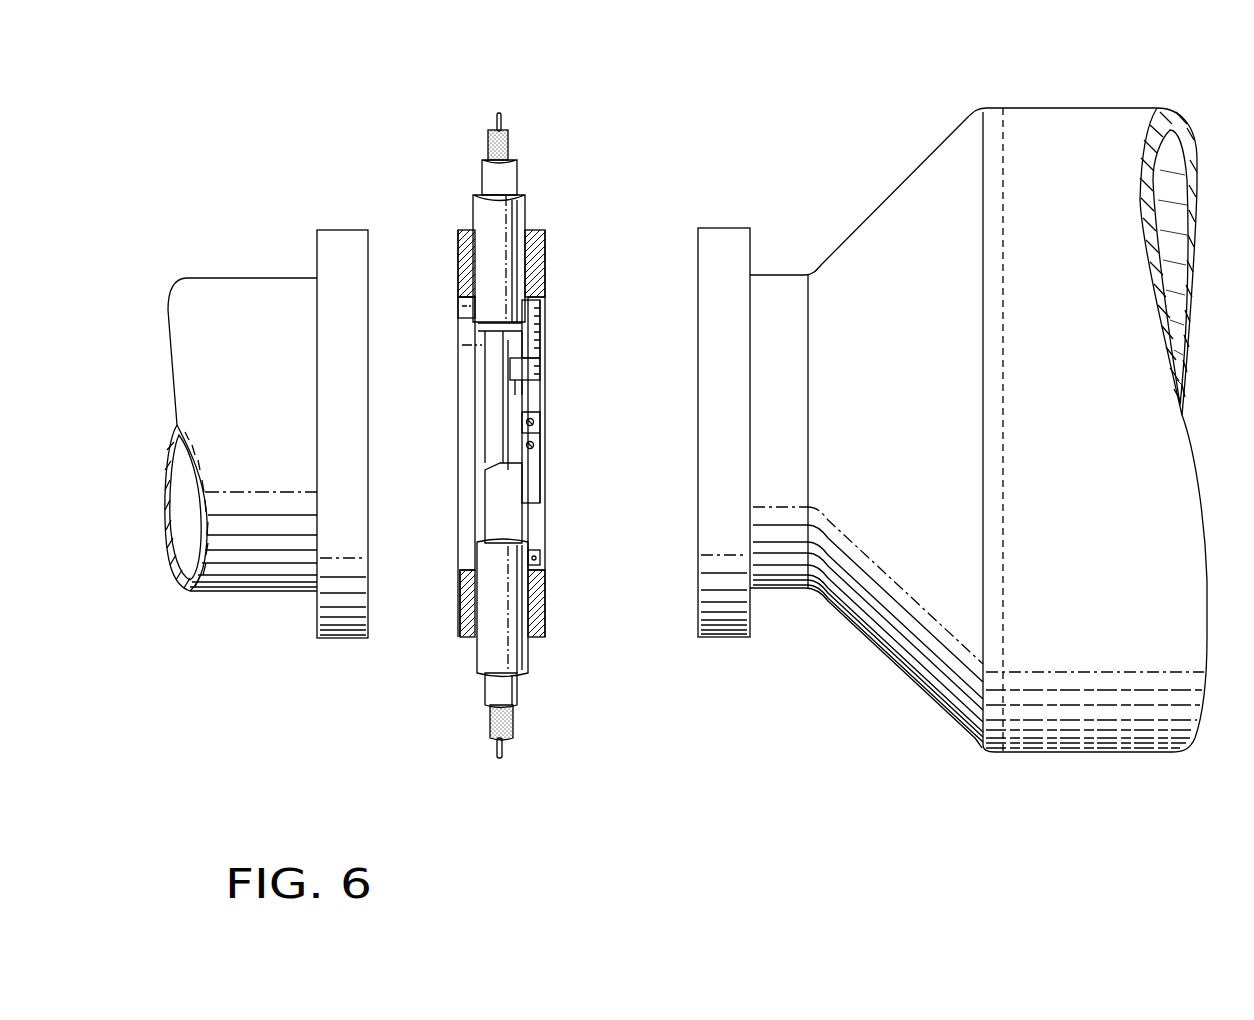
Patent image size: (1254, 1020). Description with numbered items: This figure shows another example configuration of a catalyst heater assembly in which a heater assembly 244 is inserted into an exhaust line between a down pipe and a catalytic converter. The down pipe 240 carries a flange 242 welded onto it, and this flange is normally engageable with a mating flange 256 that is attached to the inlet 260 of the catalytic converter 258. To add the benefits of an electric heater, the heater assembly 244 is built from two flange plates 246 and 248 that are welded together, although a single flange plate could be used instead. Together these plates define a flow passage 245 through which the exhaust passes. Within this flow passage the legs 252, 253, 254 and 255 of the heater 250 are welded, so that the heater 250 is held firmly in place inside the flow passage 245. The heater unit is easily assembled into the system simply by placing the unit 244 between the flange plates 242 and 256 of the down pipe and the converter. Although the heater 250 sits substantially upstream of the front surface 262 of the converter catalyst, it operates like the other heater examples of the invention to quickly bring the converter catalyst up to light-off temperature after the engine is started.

The down pipe 240 is at (243, 323).
The flange 242 is at (347, 233).
The heater assembly 244 is at (543, 643).
The flow passage 245 is at (457, 305).
The flange plate 246 is at (457, 238).
The flange plate 248 is at (540, 234).
The heater 250 is at (474, 441).
The heater leg 252 is at (537, 327).
The heater leg 253 is at (530, 366).
The heater leg 254 is at (537, 463).
The heater leg 255 is at (537, 560).
The flange 256 is at (717, 237).
The catalytic converter 258 is at (1088, 107).
The inlet 260 is at (780, 290).
The front surface 262 is at (1003, 126).